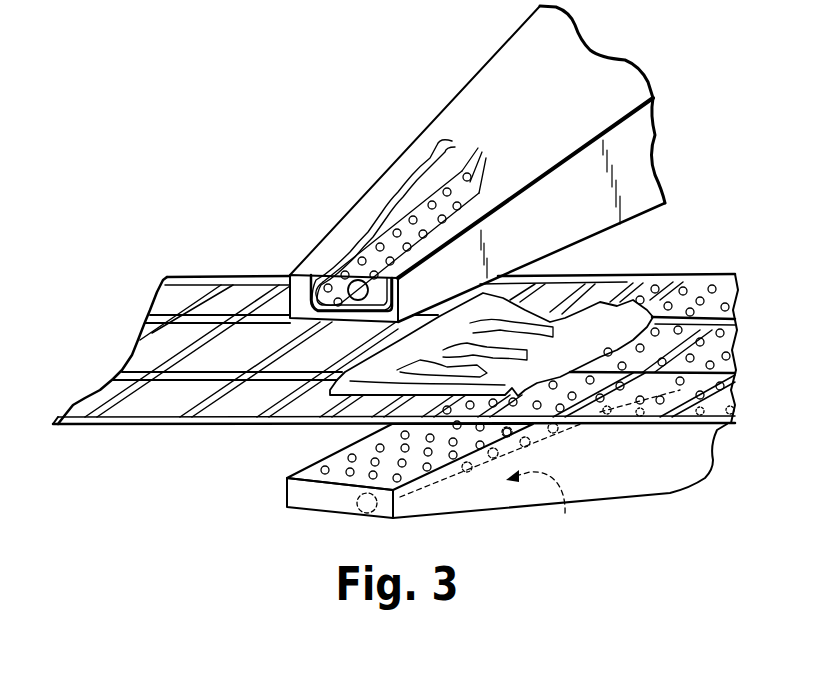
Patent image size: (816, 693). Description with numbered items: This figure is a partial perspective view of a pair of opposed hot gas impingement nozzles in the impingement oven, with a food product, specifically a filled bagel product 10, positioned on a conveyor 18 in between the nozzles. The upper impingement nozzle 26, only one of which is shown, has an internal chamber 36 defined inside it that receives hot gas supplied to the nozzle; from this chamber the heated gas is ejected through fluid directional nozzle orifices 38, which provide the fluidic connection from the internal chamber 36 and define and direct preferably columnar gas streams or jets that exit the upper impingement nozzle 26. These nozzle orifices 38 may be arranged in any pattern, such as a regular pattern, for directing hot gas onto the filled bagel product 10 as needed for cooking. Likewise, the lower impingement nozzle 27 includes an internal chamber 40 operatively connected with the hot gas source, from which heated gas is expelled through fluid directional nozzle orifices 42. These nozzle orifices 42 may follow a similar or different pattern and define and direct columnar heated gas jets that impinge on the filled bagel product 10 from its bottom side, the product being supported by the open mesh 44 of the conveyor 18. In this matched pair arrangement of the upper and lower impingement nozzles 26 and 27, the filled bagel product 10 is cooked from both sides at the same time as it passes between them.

The filled bagel product 10 is at (617, 308).
The conveyor 18 is at (395, 322).
The upper impingement nozzle 26 is at (627, 62).
The lower impingement nozzle 27 is at (610, 480).
The internal chamber 36 is at (405, 192).
The fluid directional nozzle orifices 38 is at (409, 212).
The internal chamber 40 is at (541, 507).
The fluid directional nozzle orifices 42 is at (377, 460).
The open mesh 44 is at (200, 413).